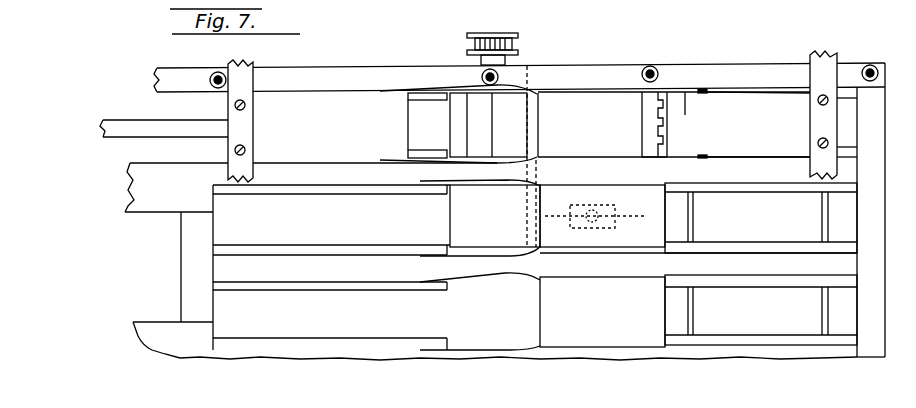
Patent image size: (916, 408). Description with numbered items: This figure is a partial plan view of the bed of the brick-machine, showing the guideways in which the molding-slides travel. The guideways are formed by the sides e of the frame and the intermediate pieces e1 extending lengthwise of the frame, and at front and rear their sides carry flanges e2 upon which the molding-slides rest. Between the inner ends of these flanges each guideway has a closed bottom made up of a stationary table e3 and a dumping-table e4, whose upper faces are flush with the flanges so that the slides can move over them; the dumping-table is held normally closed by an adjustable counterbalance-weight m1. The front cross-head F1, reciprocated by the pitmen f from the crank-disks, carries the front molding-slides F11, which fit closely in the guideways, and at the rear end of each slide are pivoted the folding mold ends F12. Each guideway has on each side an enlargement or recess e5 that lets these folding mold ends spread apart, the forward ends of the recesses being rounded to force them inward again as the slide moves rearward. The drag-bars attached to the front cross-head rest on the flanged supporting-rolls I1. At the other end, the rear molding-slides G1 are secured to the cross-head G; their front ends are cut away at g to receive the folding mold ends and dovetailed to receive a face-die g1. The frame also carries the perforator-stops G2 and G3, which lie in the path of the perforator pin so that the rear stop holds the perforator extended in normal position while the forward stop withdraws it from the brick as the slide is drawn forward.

The frame side e is at (519, 77).
The intermediate piece e1 is at (343, 200).
The flange e2 is at (218, 102).
The stationary table e3 is at (674, 218).
The dumping-table e4 is at (495, 156).
The enlargement or recess e5 is at (517, 85).
The pitman f is at (164, 115).
The cross-head F1 is at (256, 129).
The front molding-slide F11 is at (313, 128).
The folding mold end F12 is at (462, 90).
The flanged supporting-roll I1 is at (517, 20).
The recess g is at (683, 150).
The face-die g1 is at (642, 139).
The cross-head G is at (810, 128).
The rear molding-slide G1 is at (758, 115).
The perforator-stop G2 is at (697, 216).
The perforator-stop G3 is at (830, 222).
The counterbalance-weight m1 is at (602, 216).